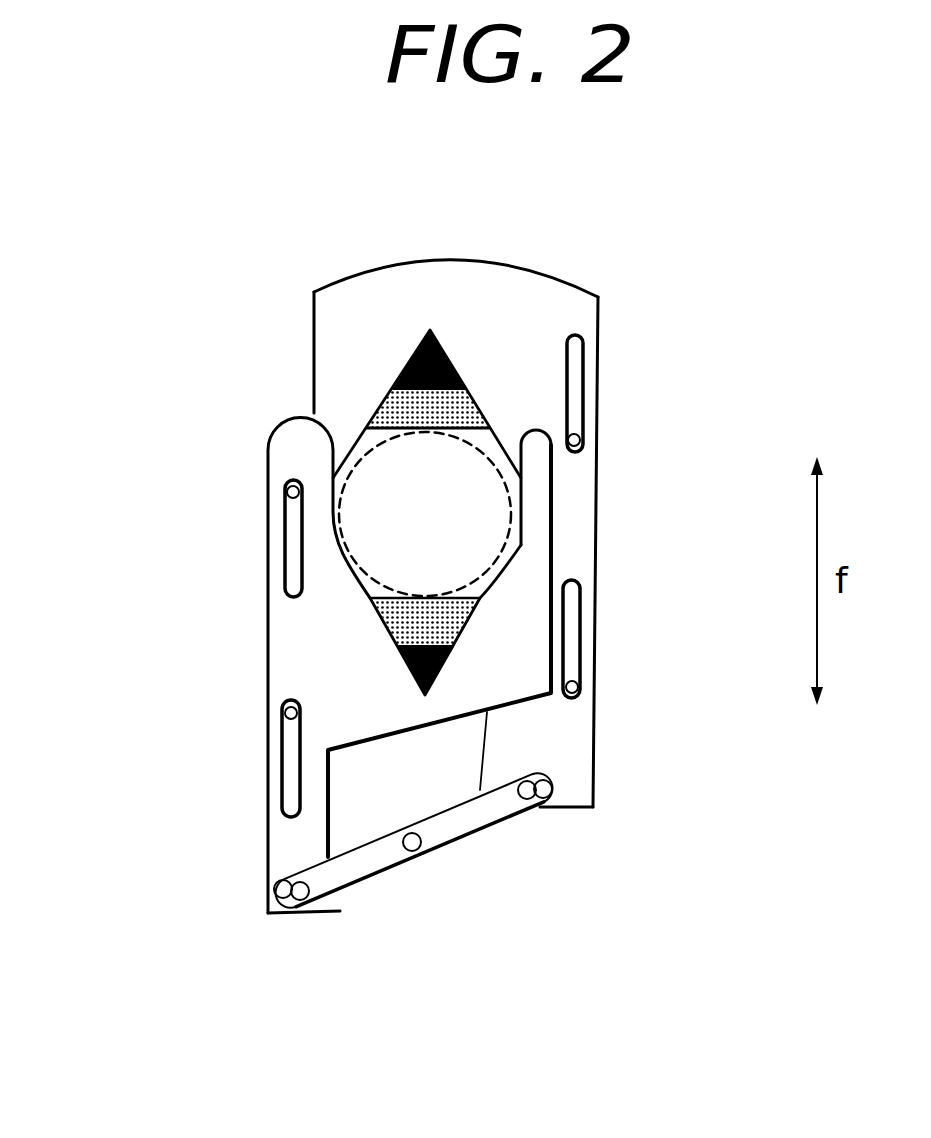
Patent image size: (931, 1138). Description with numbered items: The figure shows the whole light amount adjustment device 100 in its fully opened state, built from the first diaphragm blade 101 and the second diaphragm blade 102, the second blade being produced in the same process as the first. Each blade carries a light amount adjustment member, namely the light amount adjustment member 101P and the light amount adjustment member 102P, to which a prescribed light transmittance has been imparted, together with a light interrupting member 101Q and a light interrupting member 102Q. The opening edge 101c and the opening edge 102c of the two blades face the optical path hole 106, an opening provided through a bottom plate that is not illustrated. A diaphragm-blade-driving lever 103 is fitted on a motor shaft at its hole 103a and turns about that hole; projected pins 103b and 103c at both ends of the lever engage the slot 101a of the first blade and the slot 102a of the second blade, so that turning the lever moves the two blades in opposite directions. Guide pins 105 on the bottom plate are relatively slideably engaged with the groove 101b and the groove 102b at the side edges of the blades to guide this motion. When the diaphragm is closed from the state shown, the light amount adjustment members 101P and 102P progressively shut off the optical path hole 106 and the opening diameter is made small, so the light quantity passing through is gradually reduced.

The light amount adjustment device 100 is at (300, 312).
The first diaphragm blade 101 is at (280, 853).
The slot of first diaphragm blade 101a is at (283, 888).
The groove of first diaphragm blade 101b is at (285, 547).
The opening edge of first diaphragm blade 101c is at (395, 638).
The light amount adjustment member of first diaphragm blade 101P is at (385, 618).
The light interrupting member of first diaphragm blade 101Q is at (303, 665).
The second diaphragm blade 102 is at (573, 737).
The slot of second diaphragm blade 102a is at (558, 787).
The groove of second diaphragm blade 102b is at (582, 368).
The opening edge of second diaphragm blade 102c is at (440, 347).
The light amount adjustment member of second diaphragm blade 102P is at (457, 370).
The light interrupting member of second diaphragm blade 102Q is at (382, 288).
The diaphragm-blade-driving lever 103 is at (463, 823).
The hole of diaphragm-blade-driving lever 103a is at (412, 851).
The projected pin of driving lever 103b is at (283, 898).
The projected pin of driving lever 103c is at (548, 797).
The guide pin 105 is at (287, 493).
The optical path hole 106 is at (513, 480).